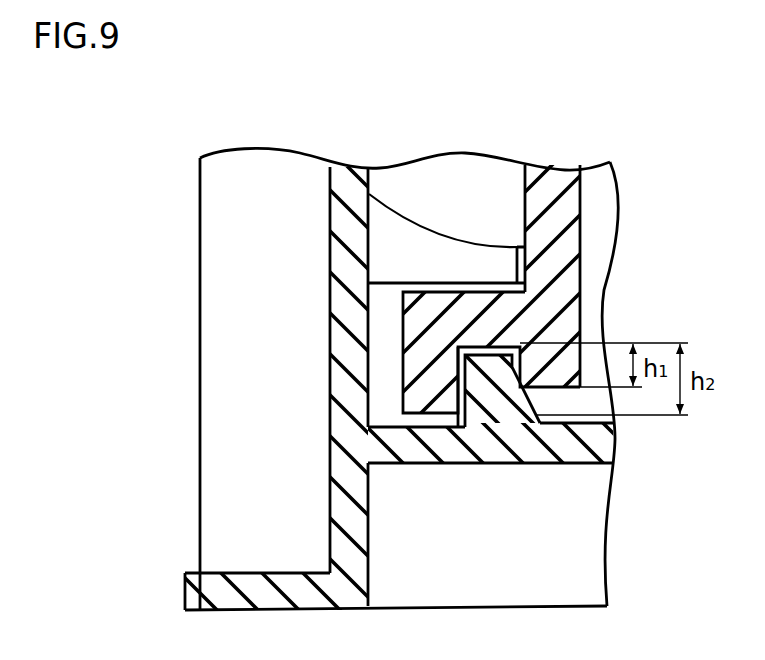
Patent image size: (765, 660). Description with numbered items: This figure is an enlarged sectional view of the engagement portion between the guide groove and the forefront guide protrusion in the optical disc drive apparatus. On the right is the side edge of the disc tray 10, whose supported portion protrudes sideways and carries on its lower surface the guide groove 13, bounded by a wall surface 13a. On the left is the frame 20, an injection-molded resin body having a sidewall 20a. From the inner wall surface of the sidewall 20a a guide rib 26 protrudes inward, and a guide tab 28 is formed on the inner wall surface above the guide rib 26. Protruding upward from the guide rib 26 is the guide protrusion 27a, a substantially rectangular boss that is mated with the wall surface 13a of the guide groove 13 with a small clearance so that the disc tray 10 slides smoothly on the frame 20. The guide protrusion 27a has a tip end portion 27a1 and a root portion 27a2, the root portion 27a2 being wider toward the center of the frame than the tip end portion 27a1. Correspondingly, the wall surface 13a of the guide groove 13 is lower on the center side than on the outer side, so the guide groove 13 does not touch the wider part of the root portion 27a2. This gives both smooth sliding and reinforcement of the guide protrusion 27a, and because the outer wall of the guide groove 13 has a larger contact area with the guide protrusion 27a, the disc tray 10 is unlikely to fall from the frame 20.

The disc tray 10 is at (509, 192).
The guide groove 13 is at (515, 345).
The wall surface 13a is at (505, 345).
The frame 20 is at (161, 191).
The sidewall 20a is at (350, 263).
The guide rib 26 is at (570, 444).
The guide protrusion 27a is at (295, 395).
The tip end portion 27a1 is at (490, 378).
The root portion 27a2 is at (493, 406).
The guide tab 28 is at (425, 253).